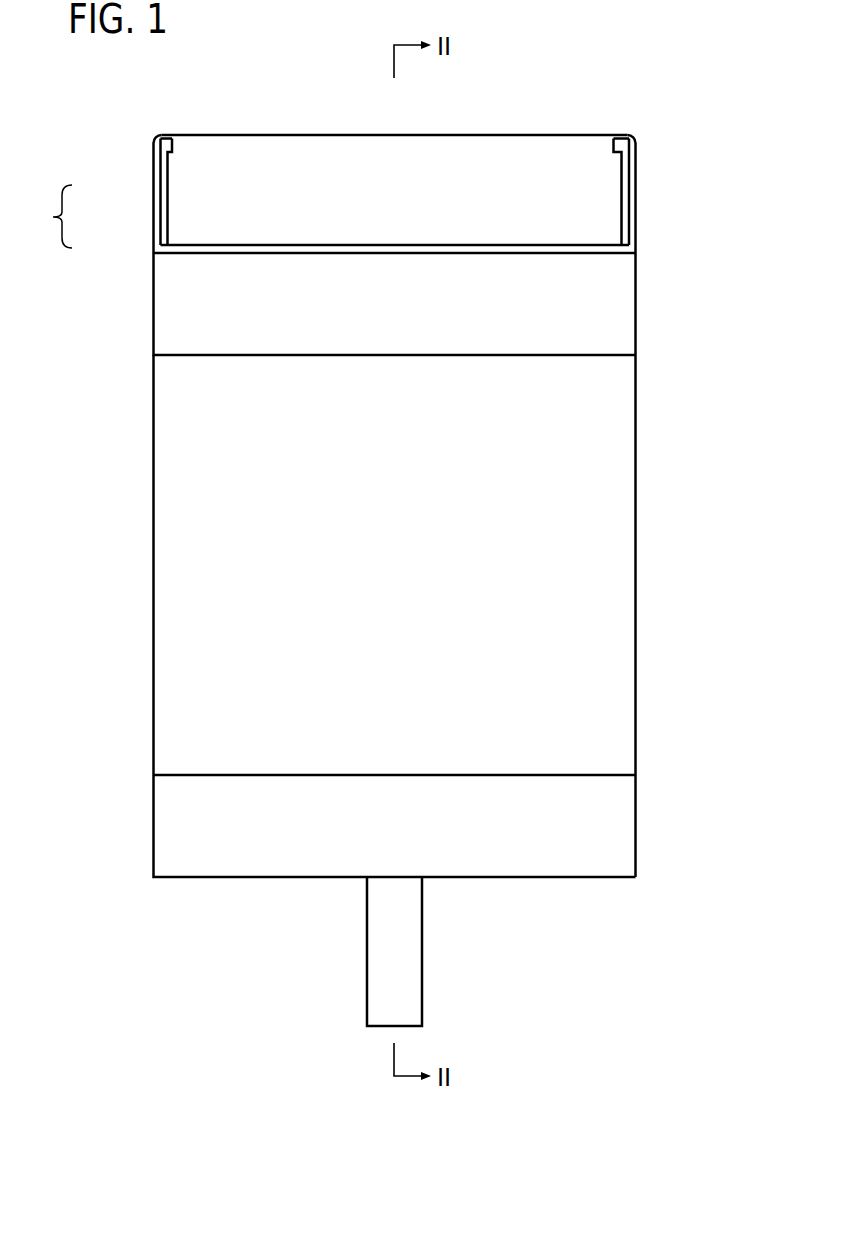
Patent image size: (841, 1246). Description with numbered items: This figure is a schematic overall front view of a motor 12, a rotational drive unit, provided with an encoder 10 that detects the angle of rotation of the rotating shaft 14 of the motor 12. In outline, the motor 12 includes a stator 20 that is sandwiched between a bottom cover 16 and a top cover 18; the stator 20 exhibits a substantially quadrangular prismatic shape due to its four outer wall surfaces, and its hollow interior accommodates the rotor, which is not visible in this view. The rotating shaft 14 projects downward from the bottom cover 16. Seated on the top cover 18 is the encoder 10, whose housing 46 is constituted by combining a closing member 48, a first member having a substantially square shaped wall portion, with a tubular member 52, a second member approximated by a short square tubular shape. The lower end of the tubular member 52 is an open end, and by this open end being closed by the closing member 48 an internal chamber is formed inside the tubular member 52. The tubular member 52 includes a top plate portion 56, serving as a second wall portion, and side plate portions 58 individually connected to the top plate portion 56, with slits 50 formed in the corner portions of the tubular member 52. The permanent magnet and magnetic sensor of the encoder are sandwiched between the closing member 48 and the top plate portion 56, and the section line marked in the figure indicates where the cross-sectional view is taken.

The encoder 10 is at (643, 152).
The motor 12 is at (638, 390).
The rotating shaft 14 is at (408, 945).
The bottom cover 16 is at (631, 828).
The top cover 18 is at (632, 308).
The stator 20 is at (632, 442).
The housing 46 is at (48, 216).
The closing member 48 is at (163, 250).
The slit 50 is at (157, 168).
The tubular member 52 is at (187, 203).
The top plate portion 56 is at (312, 135).
The side plate portion 58 is at (498, 152).